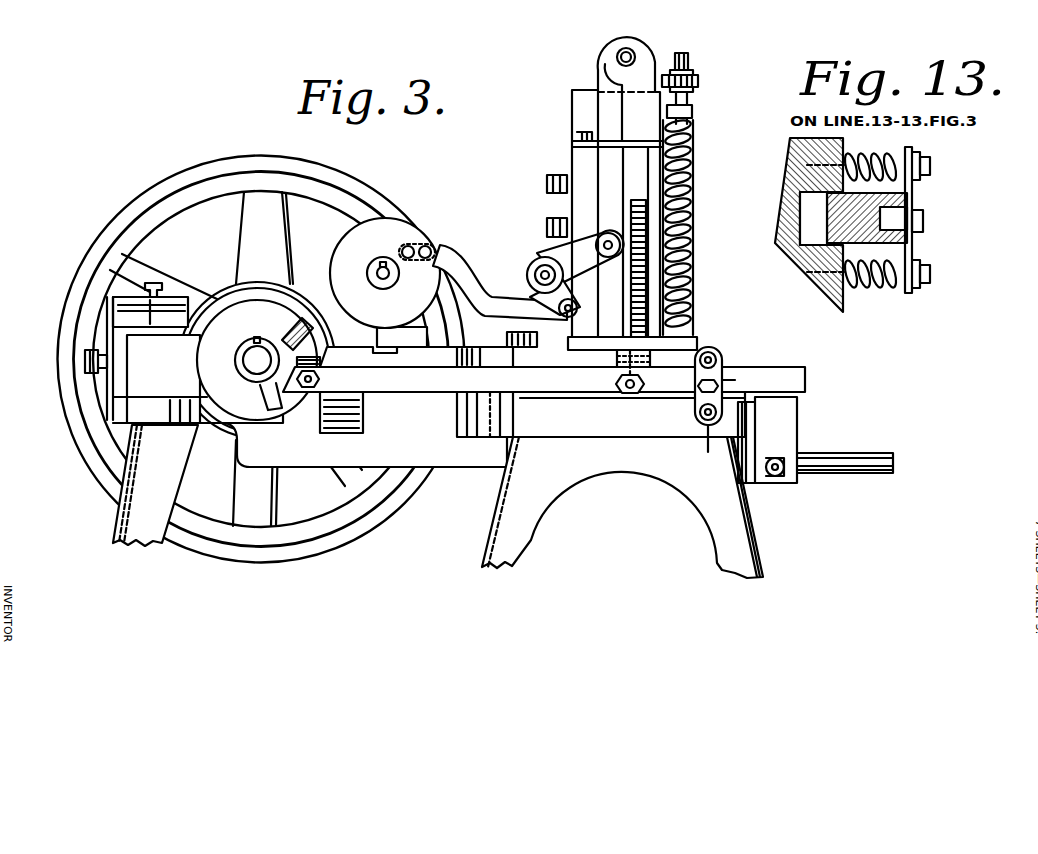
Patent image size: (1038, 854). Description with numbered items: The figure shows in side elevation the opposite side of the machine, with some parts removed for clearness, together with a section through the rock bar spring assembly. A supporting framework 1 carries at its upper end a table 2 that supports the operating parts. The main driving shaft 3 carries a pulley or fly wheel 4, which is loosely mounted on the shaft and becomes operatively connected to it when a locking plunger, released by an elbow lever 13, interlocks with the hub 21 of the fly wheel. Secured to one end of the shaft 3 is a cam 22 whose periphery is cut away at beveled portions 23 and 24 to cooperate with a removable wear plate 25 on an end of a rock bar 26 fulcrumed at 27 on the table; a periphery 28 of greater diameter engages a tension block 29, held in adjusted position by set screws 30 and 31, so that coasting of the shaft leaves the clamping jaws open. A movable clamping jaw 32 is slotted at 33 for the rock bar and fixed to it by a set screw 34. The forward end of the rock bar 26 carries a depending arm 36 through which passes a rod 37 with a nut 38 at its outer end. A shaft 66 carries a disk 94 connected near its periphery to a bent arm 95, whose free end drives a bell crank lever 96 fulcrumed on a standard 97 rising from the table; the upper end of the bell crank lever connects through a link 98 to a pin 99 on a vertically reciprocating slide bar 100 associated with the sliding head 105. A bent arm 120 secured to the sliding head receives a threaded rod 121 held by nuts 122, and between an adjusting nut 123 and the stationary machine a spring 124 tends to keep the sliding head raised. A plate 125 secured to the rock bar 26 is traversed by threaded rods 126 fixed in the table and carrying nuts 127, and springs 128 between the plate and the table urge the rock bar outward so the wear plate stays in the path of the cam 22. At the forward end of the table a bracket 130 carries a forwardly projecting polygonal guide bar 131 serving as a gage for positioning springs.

In FIG. 3, the supporting framework 1 is at (438, 501).
In FIG. 3, the table 2 is at (472, 429).
In FIG. 13, the table 2 is at (795, 262).
In FIG. 3, the main driving shaft 3 is at (257, 358).
In FIG. 3, the pulley or fly wheel 4 is at (172, 185).
In FIG. 3, the elbow lever 13 is at (710, 340).
In FIG. 3, the hub 21 is at (225, 294).
In FIG. 3, the cam 22 is at (257, 360).
In FIG. 3, the cut away portion 23 is at (292, 330).
In FIG. 3, the cut away portion 24 is at (263, 415).
In FIG. 3, the removable wear plate 25 is at (329, 373).
In FIG. 3, the rock bar 26 is at (420, 388).
In FIG. 13, the rock bar 26 is at (915, 202).
In FIG. 3, the fulcrum 27 is at (520, 350).
In FIG. 3, the periphery of greater diameter 28 is at (192, 368).
In FIG. 3, the tension block 29 is at (147, 358).
In FIG. 3, the set screw 30 is at (84, 364).
In FIG. 3, the set screw 31 is at (153, 282).
In FIG. 3, the movable clamping jaw 32 is at (600, 372).
In FIG. 3, the slot 33 is at (607, 380).
In FIG. 3, the set screw 34 is at (626, 396).
In FIG. 3, the depending arm 36 is at (776, 440).
In FIG. 3, the rod 37 is at (782, 474).
In FIG. 3, the nut 38 is at (782, 462).
In FIG. 3, the shaft 66 is at (386, 280).
In FIG. 3, the disk 94 is at (385, 282).
In FIG. 3, the bent arm 95 is at (480, 290).
In FIG. 3, the bell crank lever 96 is at (545, 258).
In FIG. 3, the standard 97 is at (548, 184).
In FIG. 3, the link 98 is at (603, 162).
In FIG. 3, the pin 99 is at (616, 57).
In FIG. 3, the slide bar 100 is at (618, 45).
In FIG. 3, the sliding head 105 is at (585, 110).
In FIG. 3, the bent arm 120 is at (698, 80).
In FIG. 3, the threaded rod 121 is at (679, 53).
In FIG. 3, the nuts 122 is at (688, 68).
In FIG. 3, the adjusting nut 123 is at (692, 112).
In FIG. 3, the spring 124 is at (690, 165).
In FIG. 3, the plate 125 is at (722, 364).
In FIG. 13, the plate 125 is at (914, 250).
In FIG. 3, the threaded rods 126 is at (708, 352).
In FIG. 13, the threaded rods 126 is at (931, 166).
In FIG. 3, the nuts 127 is at (720, 366).
In FIG. 13, the nuts 127 is at (920, 155).
In FIG. 13, the spring 128 is at (853, 224).
In FIG. 3, the bracket 130 is at (750, 418).
In FIG. 3, the guide bar 131 is at (862, 456).